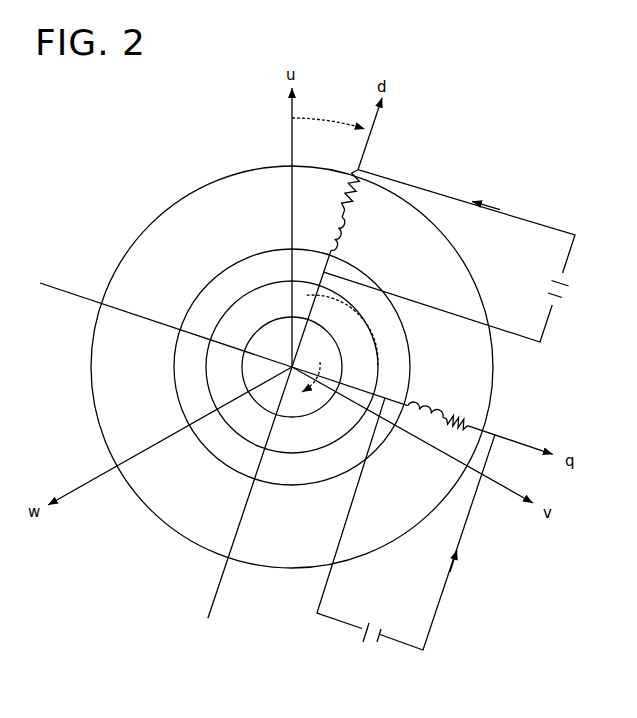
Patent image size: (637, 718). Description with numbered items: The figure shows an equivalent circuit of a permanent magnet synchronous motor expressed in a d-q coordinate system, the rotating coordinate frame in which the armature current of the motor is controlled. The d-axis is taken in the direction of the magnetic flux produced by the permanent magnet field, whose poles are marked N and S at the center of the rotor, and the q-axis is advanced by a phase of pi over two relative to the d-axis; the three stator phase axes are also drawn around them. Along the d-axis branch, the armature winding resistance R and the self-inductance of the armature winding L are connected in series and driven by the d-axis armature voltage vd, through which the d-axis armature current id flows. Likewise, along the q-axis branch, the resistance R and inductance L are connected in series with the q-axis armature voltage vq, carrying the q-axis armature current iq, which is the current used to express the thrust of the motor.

The armature winding resistance R is at (394, 300).
The self-inductance of the armature winding L is at (389, 318).
The d-axis armature voltage vd is at (459, 256).
The q-axis armature voltage vq is at (406, 524).
The d-axis armature current id is at (482, 193).
The q-axis armature current iq is at (466, 561).
The rotor magnet north pole N is at (310, 304).
The rotor magnet south pole S is at (271, 435).